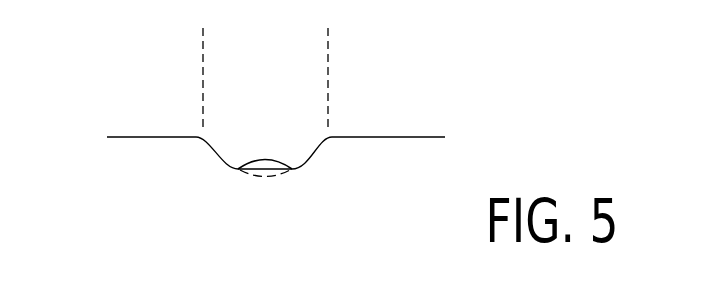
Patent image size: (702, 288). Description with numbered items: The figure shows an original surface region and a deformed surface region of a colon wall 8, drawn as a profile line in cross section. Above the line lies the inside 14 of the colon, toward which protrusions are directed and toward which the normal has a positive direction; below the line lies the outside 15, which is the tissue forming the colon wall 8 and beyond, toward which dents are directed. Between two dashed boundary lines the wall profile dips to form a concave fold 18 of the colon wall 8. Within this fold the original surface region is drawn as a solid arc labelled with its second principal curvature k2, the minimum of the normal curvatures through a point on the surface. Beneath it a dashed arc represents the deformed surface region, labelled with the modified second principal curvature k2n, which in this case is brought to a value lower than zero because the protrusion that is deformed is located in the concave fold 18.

The colon wall 8 is at (421, 136).
The inside of the colon 14 is at (149, 78).
The outside 15 is at (149, 175).
The concave fold 18 is at (267, 60).
The second principal curvature k2 is at (265, 157).
The modified second principal curvature k2n is at (269, 177).